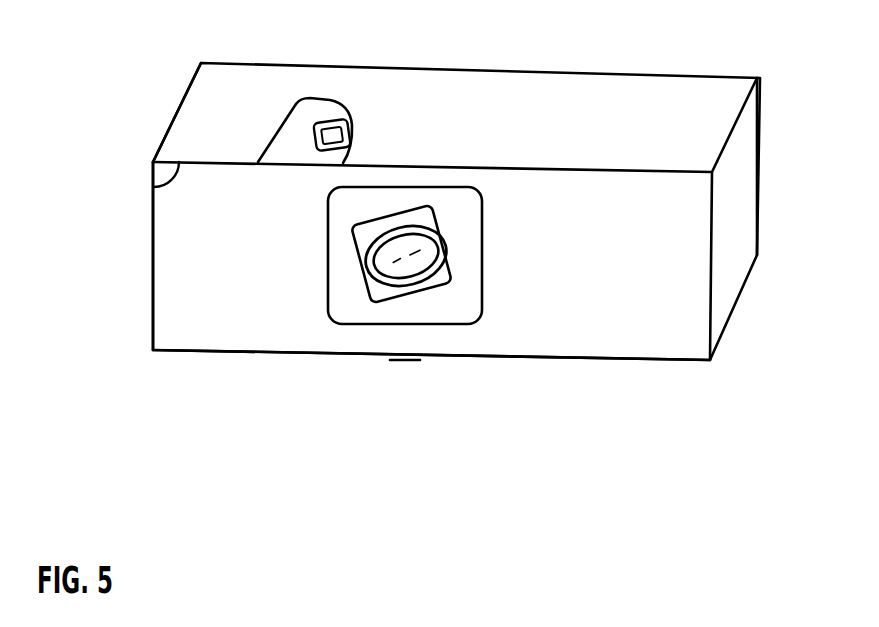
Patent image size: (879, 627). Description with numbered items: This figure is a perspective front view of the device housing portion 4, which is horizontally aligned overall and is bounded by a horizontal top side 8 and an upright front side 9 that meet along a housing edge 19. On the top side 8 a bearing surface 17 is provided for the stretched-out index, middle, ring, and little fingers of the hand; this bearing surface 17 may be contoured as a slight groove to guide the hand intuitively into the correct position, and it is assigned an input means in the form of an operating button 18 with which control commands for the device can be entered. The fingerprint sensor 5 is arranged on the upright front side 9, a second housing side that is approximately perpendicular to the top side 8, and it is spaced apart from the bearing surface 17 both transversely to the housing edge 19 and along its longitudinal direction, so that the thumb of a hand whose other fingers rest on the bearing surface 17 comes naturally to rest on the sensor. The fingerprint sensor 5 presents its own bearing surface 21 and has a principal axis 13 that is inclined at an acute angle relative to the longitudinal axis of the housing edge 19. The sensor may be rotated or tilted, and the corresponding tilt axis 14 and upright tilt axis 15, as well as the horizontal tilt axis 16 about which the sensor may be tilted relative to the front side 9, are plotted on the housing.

The device housing portion 4 is at (727, 75).
The fingerprint sensor 5 is at (422, 283).
The horizontal top side 8 is at (193, 107).
The upright front side 9 is at (152, 306).
The principal axis 13 is at (463, 232).
The tilt axis 14 is at (345, 373).
The upright tilt axis 15 is at (403, 372).
The horizontal tilt axis 16 is at (688, 255).
The bearing surface 17 is at (296, 112).
The operating button 18 is at (349, 123).
The housing edge 19 is at (152, 185).
The bearing surface 21 is at (383, 240).